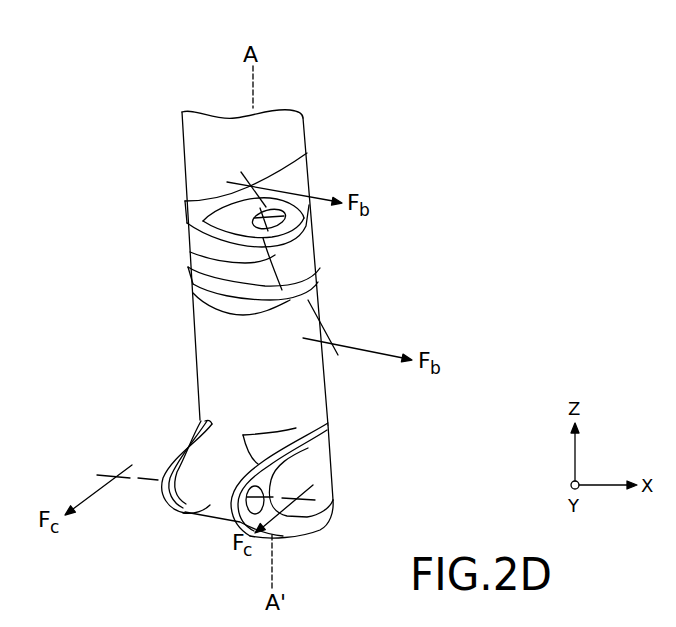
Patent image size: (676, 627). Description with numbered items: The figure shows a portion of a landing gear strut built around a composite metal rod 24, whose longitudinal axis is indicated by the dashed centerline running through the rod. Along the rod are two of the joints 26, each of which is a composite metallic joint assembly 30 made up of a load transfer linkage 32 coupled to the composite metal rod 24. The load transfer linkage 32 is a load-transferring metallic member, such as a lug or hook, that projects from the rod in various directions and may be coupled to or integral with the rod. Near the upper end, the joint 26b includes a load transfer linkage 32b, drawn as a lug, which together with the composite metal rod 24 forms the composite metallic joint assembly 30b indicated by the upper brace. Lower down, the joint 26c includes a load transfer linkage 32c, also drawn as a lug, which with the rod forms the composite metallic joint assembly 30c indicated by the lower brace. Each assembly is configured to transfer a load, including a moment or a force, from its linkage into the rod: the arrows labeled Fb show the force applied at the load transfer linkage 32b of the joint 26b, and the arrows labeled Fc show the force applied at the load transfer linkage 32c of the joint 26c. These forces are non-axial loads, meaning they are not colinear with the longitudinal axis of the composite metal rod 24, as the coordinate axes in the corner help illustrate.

The composite metal rod 24 is at (217, 362).
The joint 26 is at (249, 387).
The joint 26b is at (332, 247).
The joint 26c is at (151, 522).
The composite metallic joint assembly 30 is at (375, 345).
The composite metallic joint assembly 30b is at (465, 160).
The composite metallic joint assembly 30c is at (362, 408).
The load transfer linkage 32 is at (138, 374).
The load transfer linkage 32b is at (240, 238).
The load transfer linkage 32c is at (167, 462).